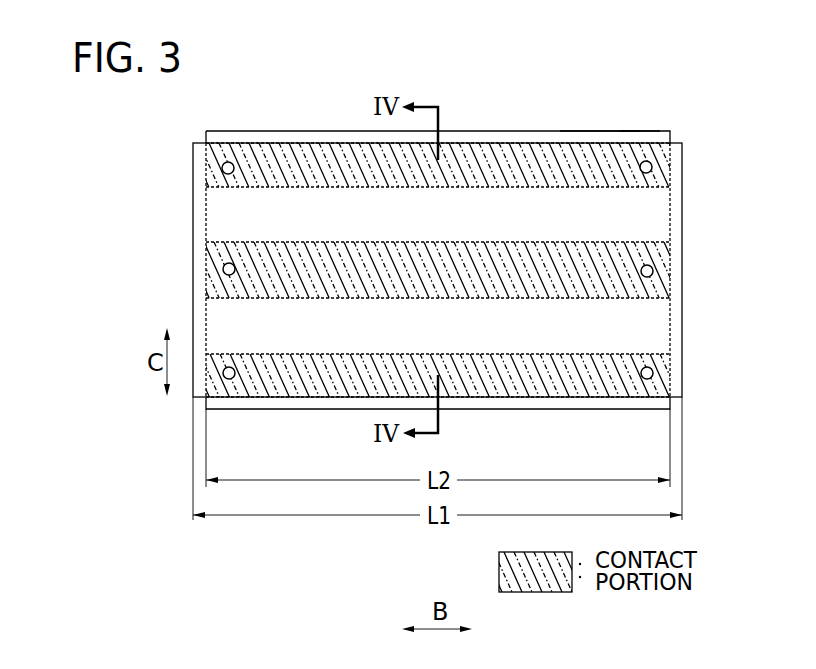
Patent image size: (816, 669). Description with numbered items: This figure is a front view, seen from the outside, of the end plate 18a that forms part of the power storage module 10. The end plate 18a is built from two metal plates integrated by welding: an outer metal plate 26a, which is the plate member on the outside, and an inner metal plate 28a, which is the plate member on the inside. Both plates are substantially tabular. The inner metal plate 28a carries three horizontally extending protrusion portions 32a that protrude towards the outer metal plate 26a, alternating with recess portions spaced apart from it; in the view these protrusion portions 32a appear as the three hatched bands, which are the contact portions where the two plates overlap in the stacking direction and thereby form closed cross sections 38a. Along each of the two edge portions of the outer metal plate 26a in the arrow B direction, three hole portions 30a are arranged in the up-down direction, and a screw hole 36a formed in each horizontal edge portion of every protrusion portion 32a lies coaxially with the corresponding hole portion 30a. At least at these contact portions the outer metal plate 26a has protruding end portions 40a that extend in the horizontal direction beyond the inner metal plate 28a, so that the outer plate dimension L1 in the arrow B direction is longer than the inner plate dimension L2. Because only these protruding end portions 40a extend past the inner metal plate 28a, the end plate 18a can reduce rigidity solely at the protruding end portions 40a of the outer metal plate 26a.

The power storage module 10 is at (438, 236).
The end plate 18a is at (503, 89).
The outer metal plate 26a is at (602, 133).
The inner metal plate 28a is at (633, 122).
The hole portion 30a is at (361, 270).
The screw hole 36a is at (223, 269).
The protrusion portion 32a is at (667, 157).
The closed cross section 38a is at (657, 200).
The protruding end portion 40a is at (198, 215).